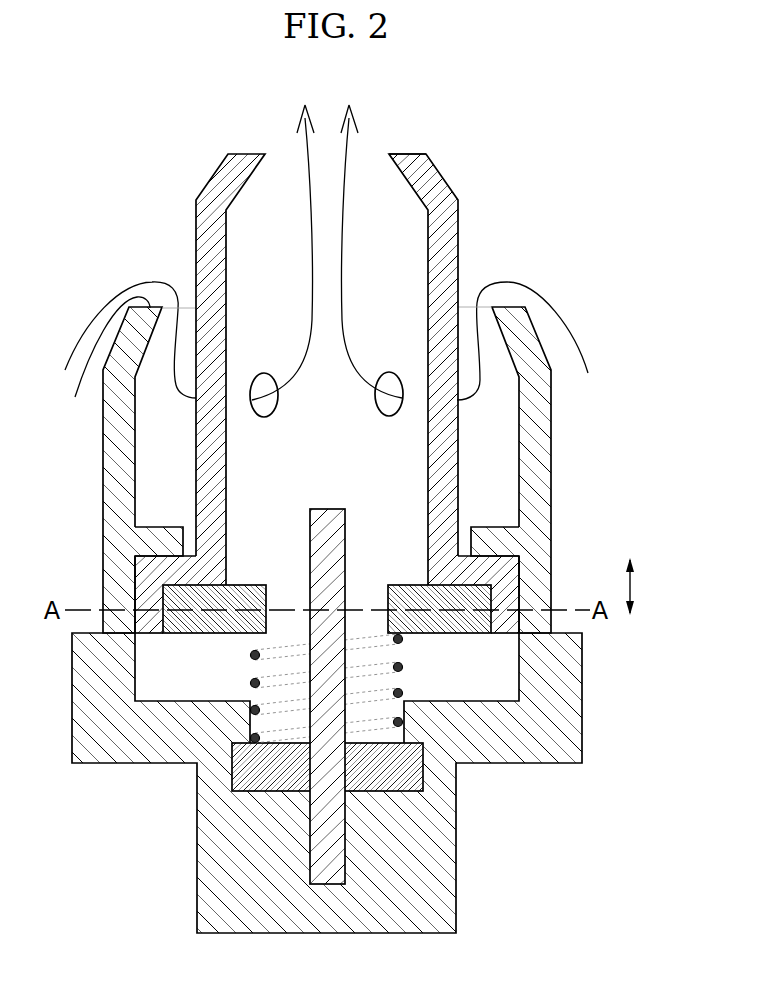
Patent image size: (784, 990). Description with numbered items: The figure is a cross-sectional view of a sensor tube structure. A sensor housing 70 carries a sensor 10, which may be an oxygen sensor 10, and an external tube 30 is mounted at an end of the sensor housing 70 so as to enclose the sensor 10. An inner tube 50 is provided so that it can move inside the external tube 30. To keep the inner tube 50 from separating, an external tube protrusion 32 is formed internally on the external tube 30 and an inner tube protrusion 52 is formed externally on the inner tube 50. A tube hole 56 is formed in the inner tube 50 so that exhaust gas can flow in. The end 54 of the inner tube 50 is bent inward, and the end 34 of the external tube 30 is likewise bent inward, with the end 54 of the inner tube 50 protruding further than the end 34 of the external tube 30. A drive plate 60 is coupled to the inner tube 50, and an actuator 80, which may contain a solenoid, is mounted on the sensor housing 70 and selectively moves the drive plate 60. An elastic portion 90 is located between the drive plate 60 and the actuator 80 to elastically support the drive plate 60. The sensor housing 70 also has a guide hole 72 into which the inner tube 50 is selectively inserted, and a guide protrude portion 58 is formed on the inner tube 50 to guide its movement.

The sensor 10 is at (337, 857).
The external tube 30 is at (559, 416).
The external tube protrusion 32 is at (163, 528).
The end of the external tube 34 is at (101, 361).
The inner tube 50 is at (465, 205).
The inner tube protrusion 52 is at (150, 567).
The end of the inner tube 54 is at (412, 154).
The tube hole 56 is at (267, 375).
The guide protrude portion 58 is at (147, 636).
The drive plate 60 is at (468, 641).
The sensor housing 70 is at (420, 923).
The guide hole 72 is at (140, 684).
The actuator 80 is at (228, 776).
The elastic portion 90 is at (252, 683).